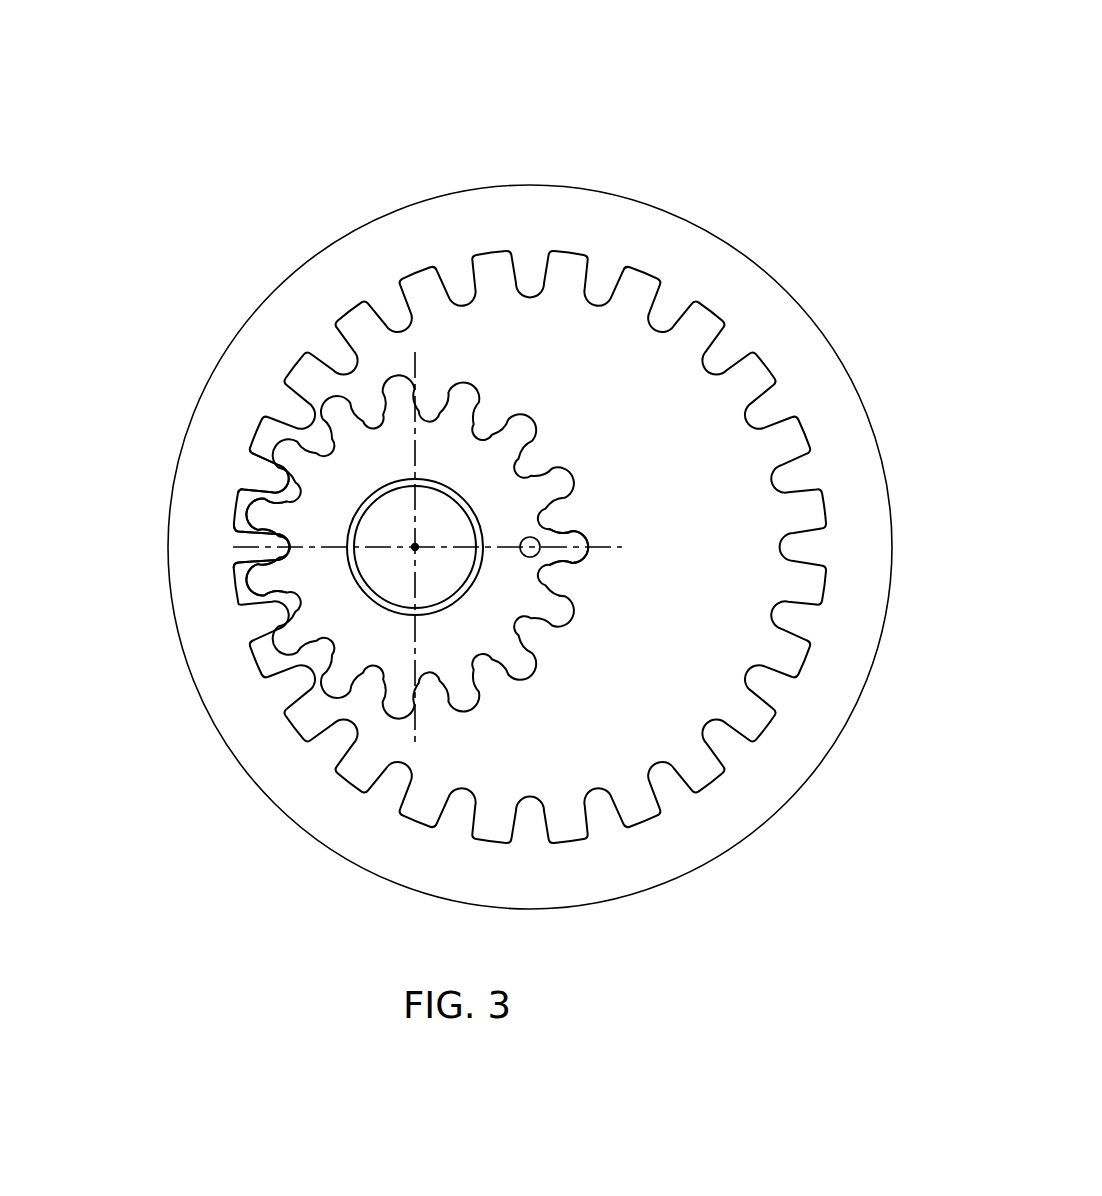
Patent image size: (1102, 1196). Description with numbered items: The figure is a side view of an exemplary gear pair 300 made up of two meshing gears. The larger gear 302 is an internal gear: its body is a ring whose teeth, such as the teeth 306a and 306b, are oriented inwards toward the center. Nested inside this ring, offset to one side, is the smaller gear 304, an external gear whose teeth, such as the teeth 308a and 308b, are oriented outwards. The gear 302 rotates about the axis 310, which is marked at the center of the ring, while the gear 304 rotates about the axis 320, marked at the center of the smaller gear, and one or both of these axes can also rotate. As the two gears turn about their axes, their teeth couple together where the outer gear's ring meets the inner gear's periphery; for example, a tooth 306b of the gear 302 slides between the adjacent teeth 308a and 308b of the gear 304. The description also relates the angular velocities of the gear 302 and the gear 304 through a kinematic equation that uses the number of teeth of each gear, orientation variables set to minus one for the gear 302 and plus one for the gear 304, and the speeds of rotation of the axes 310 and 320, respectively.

The gear pair 300 is at (660, 95).
The gear 302 is at (727, 213).
The gear 304 is at (592, 563).
The tooth 306a is at (263, 475).
The tooth 306b is at (273, 540).
The tooth 308a is at (267, 513).
The tooth 308b is at (267, 577).
The axis 310 is at (540, 535).
The axis 320 is at (415, 547).